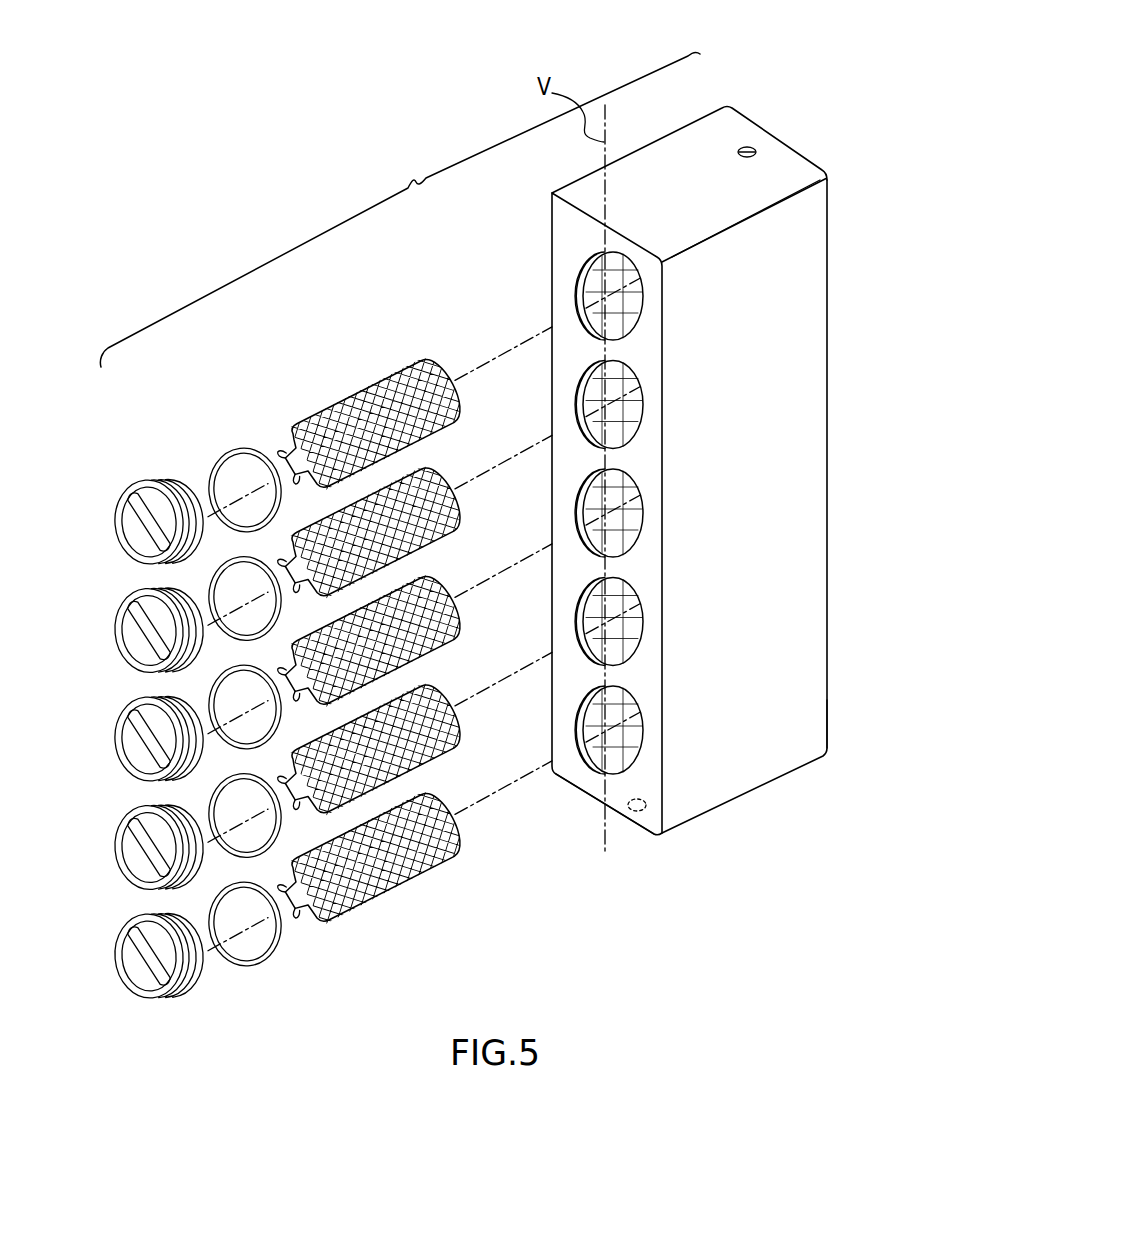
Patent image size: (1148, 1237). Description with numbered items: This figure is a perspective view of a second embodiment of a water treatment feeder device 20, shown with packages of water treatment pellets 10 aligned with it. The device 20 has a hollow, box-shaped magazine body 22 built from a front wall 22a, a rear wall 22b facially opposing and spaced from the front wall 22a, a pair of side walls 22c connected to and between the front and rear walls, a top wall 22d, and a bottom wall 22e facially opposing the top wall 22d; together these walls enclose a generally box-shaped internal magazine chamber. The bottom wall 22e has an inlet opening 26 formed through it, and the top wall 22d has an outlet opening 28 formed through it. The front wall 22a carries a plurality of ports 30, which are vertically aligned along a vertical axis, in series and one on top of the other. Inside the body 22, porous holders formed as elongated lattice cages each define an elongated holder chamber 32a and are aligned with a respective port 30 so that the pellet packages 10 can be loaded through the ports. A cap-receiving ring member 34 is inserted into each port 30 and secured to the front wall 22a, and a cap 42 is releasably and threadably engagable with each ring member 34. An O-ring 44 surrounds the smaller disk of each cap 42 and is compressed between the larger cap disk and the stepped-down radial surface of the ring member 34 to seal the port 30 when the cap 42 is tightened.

The filter cartridge 10 is at (352, 372).
The water treatment feeder device 20 is at (646, 120).
The magazine body 22 is at (800, 441).
The front wall 22a is at (562, 224).
The rear wall 22b is at (829, 240).
The side walls 22c is at (800, 680).
The top wall 22d is at (797, 165).
The bottom wall 22e is at (632, 826).
The inlet opening 26 is at (646, 803).
The outlet opening 28 is at (750, 146).
The ports 30 is at (605, 296).
The elongated holder chamber 32a is at (593, 274).
The cap-receiving ring members 34 is at (578, 305).
The caps 42 is at (109, 518).
The O-ring 44 is at (233, 447).